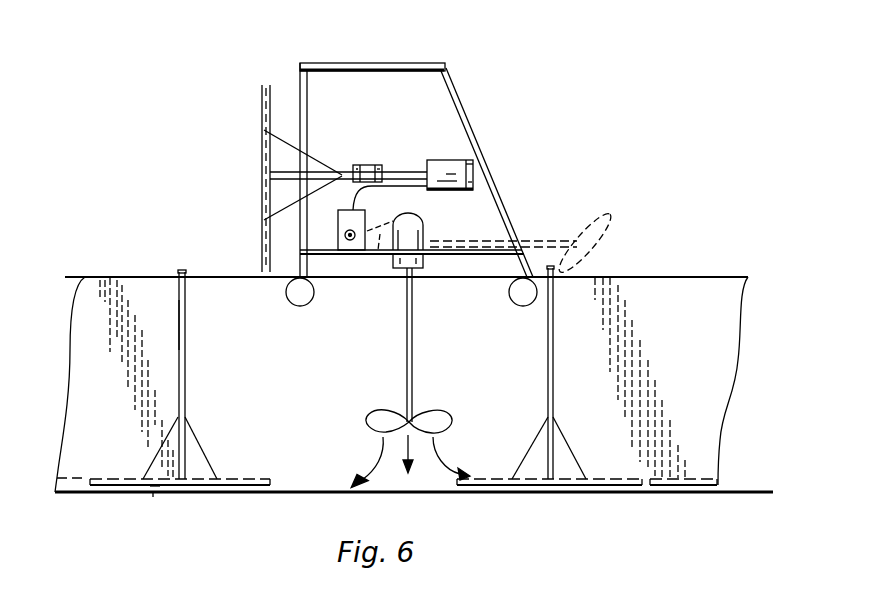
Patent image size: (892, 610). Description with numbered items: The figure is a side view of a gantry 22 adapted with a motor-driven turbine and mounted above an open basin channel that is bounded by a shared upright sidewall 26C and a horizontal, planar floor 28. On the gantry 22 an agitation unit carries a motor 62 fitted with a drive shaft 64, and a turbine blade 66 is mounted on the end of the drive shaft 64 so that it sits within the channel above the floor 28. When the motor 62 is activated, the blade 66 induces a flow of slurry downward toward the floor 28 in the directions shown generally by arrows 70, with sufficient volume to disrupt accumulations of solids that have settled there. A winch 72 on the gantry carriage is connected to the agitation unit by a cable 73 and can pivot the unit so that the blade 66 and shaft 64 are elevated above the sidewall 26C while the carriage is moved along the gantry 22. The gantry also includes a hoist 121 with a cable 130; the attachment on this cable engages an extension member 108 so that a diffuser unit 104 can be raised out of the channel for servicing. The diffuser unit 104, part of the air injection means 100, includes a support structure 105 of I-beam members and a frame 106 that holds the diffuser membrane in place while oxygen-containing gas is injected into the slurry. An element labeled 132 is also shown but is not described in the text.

The gantry 22 is at (402, 63).
The coupling 132 is at (360, 165).
The cable 130 is at (413, 171).
The hoist 121 is at (468, 178).
The motor 62 is at (424, 228).
The winch 72 is at (340, 226).
The cable 73 is at (415, 284).
The drive shaft 64 is at (413, 348).
The turbine blade 66 is at (450, 421).
The arrows 70 is at (410, 448).
The sidewall 26C is at (143, 277).
The extension member 108 is at (178, 325).
The diffuser unit 104 is at (184, 382).
The support structure 105 is at (257, 478).
The frame 106 is at (157, 492).
The air injection means 100 is at (568, 444).
The floor 28 is at (430, 493).